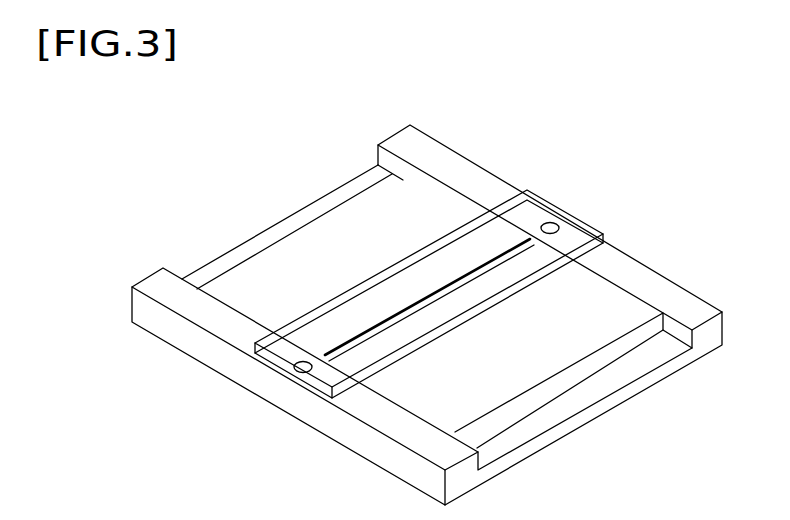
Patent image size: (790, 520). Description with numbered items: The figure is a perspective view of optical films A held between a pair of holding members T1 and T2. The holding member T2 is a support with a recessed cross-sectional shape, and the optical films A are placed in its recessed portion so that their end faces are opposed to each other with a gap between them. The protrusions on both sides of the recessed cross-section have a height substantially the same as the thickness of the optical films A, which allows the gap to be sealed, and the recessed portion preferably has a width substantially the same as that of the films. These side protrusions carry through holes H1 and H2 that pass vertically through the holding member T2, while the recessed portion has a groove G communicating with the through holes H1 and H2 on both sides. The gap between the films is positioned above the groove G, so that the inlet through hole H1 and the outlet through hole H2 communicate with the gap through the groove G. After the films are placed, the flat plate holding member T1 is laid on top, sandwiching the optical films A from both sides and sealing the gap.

The holding member T1 is at (447, 288).
The holding member T2 is at (438, 151).
The optical films A is at (336, 213).
The groove G is at (617, 298).
The through hole H1 is at (556, 222).
The through hole H2 is at (300, 371).